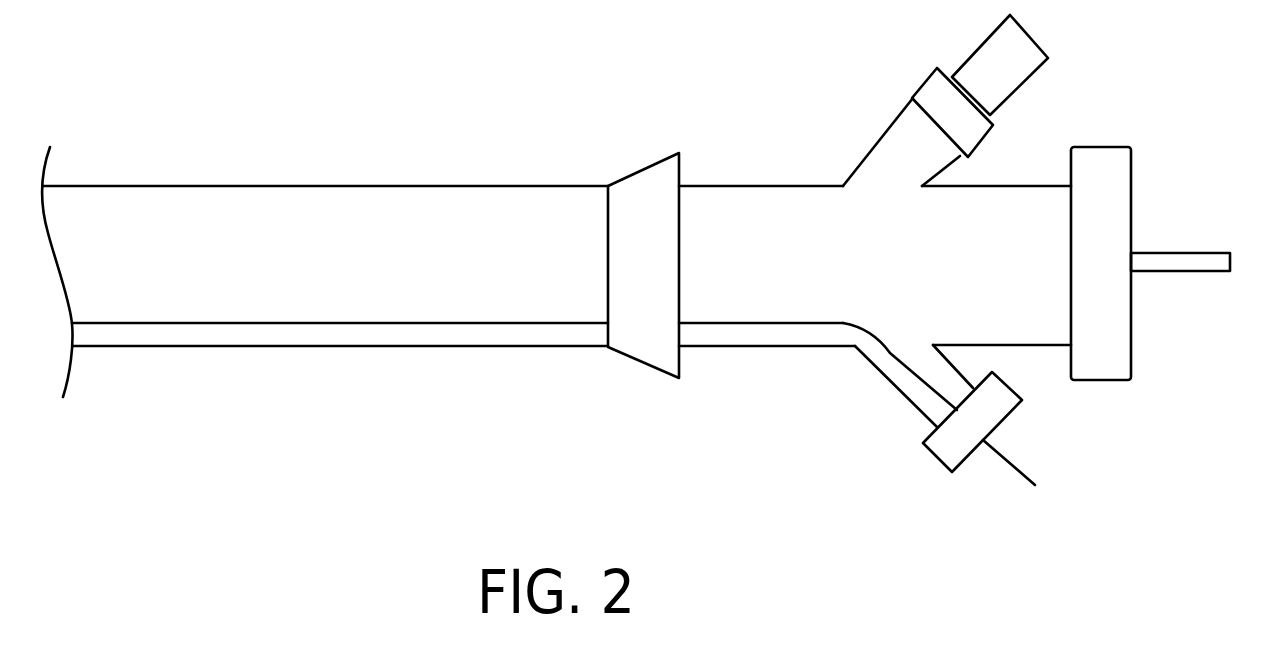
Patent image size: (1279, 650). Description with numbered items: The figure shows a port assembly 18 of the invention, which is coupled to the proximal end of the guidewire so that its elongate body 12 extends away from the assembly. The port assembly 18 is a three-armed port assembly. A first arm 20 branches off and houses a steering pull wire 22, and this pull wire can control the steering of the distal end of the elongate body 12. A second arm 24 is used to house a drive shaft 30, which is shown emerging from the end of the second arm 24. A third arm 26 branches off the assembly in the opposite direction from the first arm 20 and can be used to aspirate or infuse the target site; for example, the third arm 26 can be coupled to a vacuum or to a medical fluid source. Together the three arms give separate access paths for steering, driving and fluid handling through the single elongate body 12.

The elongate body 12 is at (203, 212).
The port assembly 18 is at (544, 92).
The first arm 20 is at (897, 377).
The steering pull wire 22 is at (1017, 467).
The second arm 24 is at (1018, 198).
The third arm 26 is at (905, 133).
The drive shaft 30 is at (1180, 253).